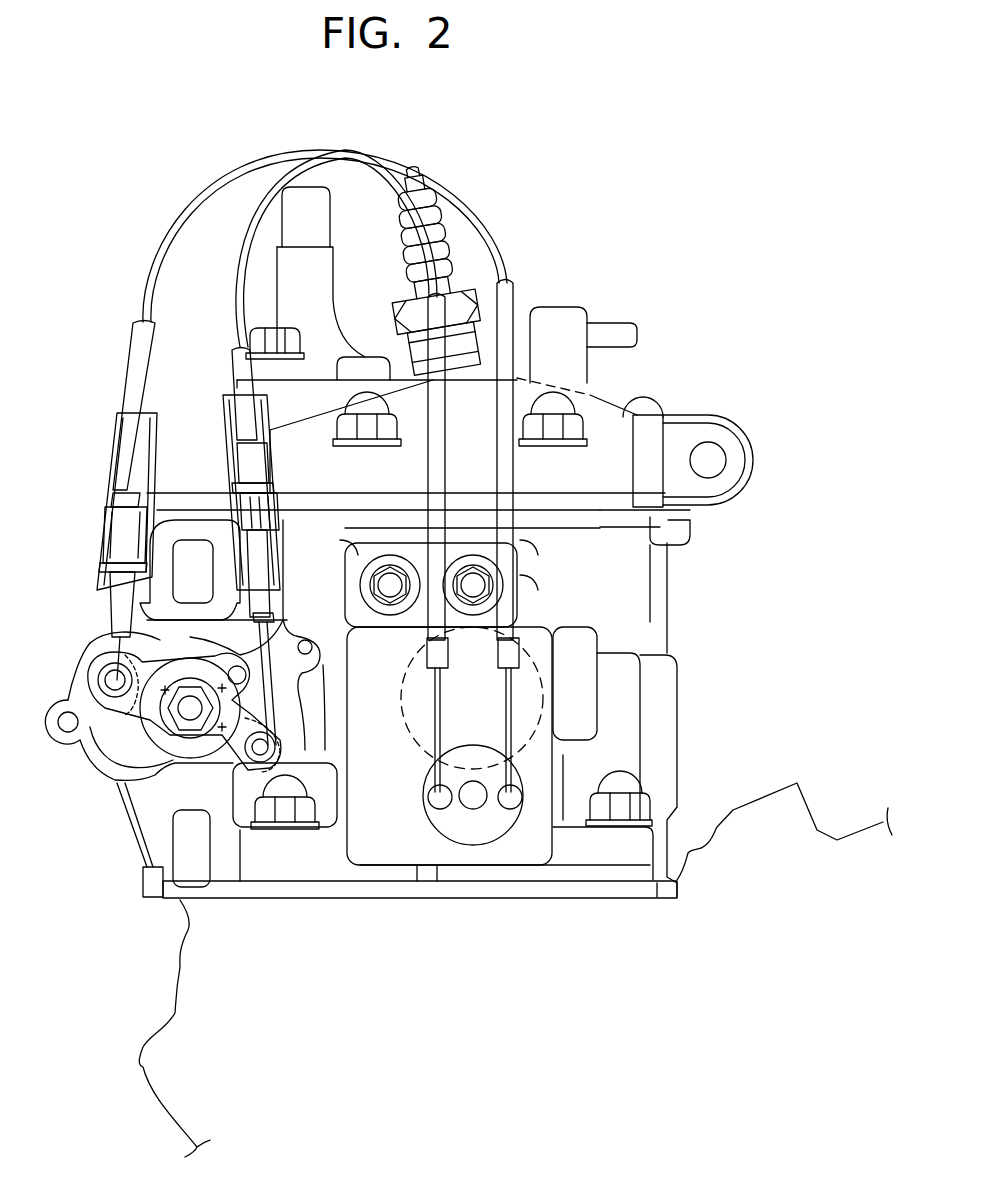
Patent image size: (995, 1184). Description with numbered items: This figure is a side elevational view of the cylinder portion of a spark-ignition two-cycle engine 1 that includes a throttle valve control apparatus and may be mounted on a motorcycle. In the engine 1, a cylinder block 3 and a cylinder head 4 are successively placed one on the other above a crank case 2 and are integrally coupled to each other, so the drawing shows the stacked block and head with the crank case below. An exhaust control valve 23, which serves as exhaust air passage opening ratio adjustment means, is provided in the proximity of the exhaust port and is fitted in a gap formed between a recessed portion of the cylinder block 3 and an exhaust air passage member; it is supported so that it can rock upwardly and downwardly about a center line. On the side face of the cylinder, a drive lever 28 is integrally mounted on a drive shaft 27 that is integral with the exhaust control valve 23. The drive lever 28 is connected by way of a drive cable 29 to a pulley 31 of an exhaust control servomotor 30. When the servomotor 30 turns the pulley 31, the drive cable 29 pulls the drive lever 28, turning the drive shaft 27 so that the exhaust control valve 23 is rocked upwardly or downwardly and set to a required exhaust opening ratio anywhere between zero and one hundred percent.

The two-cycle engine 1 is at (684, 399).
The crank case 2 is at (733, 810).
The cylinder block 3 is at (667, 603).
The cylinder head 4 is at (605, 430).
The exhaust control valve 23 is at (98, 785).
The drive shaft 27 is at (192, 730).
The drive lever 28 is at (165, 720).
The drive cable 29 is at (90, 645).
The exhaust control servomotor 30 is at (540, 777).
The pulley 31 is at (437, 820).